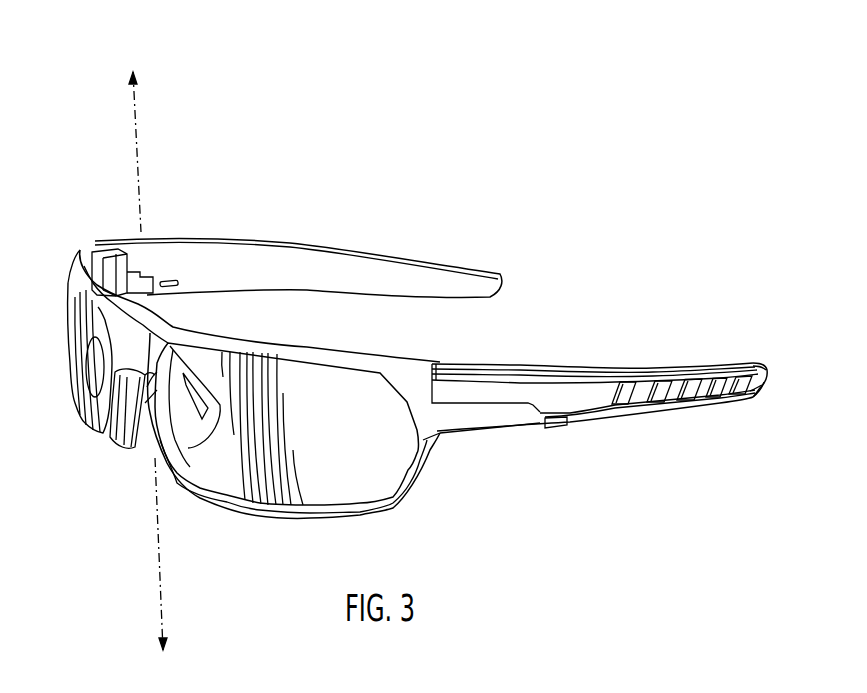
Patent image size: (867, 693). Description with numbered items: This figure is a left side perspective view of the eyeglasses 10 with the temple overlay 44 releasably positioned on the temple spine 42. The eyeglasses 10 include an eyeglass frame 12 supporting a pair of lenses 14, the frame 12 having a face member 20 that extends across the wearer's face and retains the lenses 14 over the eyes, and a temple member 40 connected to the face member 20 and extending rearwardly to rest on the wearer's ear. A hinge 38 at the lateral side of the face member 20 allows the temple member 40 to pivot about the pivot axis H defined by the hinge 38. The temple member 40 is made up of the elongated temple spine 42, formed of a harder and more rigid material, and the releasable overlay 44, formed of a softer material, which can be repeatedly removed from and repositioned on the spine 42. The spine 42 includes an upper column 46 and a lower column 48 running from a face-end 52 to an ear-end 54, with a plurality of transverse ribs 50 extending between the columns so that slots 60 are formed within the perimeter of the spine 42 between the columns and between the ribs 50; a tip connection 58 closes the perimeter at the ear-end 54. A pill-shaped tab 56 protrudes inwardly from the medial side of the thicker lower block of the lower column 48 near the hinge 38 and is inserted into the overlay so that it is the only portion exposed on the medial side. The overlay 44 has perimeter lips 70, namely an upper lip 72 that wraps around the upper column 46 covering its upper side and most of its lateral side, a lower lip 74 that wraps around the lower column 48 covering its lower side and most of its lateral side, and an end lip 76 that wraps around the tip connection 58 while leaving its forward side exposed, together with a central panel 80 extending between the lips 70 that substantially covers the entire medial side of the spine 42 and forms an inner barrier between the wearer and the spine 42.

The eyeglasses 10 is at (70, 124).
The eyeglass frame 12 is at (80, 250).
The lenses 14 is at (78, 367).
The face member 20 is at (60, 304).
The hinge 38 is at (150, 276).
The temple member 40 is at (505, 243).
The temple spine 42 is at (497, 427).
The temple overlay 44 is at (340, 278).
The upper column 46 is at (583, 386).
The lower column 48 is at (568, 424).
The transverse ribs 50 is at (633, 396).
The face-end 52 is at (437, 370).
The ear-end 54 is at (750, 365).
The pill-shaped tab 56 is at (175, 280).
The tip connection 58 is at (762, 387).
The slots 60 is at (700, 398).
The lips 70 is at (707, 368).
The upper lip 72 is at (650, 376).
The lower lip 74 is at (601, 422).
The end lip 76 is at (768, 372).
The panel 80 is at (287, 265).
The pivot axis H is at (136, 112).